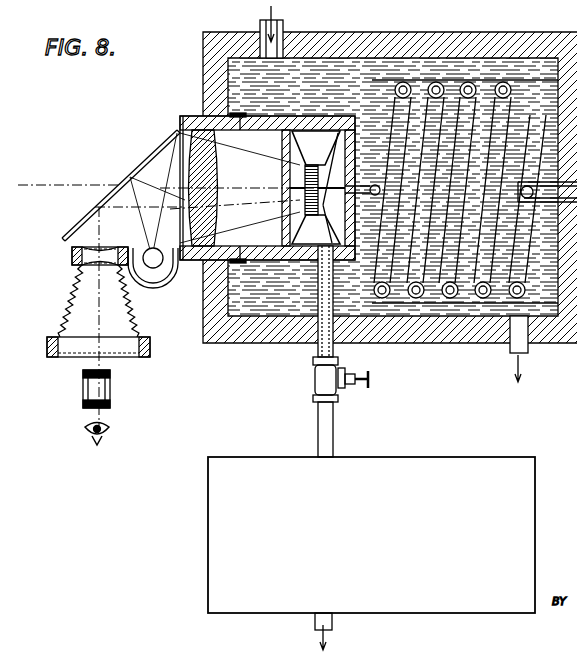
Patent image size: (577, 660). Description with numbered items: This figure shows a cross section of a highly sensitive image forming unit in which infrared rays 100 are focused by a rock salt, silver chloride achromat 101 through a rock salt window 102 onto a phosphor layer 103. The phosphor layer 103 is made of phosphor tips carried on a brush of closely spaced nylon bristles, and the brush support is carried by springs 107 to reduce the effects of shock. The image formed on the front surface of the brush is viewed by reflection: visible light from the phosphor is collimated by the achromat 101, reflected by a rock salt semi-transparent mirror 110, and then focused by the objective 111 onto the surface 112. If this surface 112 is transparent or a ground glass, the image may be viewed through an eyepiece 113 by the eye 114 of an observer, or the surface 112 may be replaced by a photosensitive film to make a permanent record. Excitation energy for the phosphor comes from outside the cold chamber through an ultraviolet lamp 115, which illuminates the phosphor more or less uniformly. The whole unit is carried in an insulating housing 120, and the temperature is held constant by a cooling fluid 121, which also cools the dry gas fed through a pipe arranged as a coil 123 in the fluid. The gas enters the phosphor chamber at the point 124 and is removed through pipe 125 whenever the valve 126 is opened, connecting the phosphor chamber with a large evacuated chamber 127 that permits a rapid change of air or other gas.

The infrared rays 100 is at (68, 185).
The rock salt, silver chloride achromat 101 is at (186, 116).
The rock salt window 102 is at (300, 238).
The phosphor layer 103 is at (308, 168).
The springs 107 is at (333, 106).
The rock salt semi-transparent mirror 110 is at (152, 150).
The objective 111 is at (80, 250).
The surface 112 is at (70, 358).
The eyepiece 113 is at (105, 393).
The eye 114 is at (109, 429).
The ultraviolet lamp 115 is at (155, 268).
The insulating housing 120 is at (447, 40).
The cooling fluid 121 is at (478, 70).
The coil 123 is at (505, 130).
The point of gas entry 124 is at (369, 180).
The pipe 125 is at (318, 348).
The valve 126 is at (318, 386).
The evacuated chamber 127 is at (405, 468).